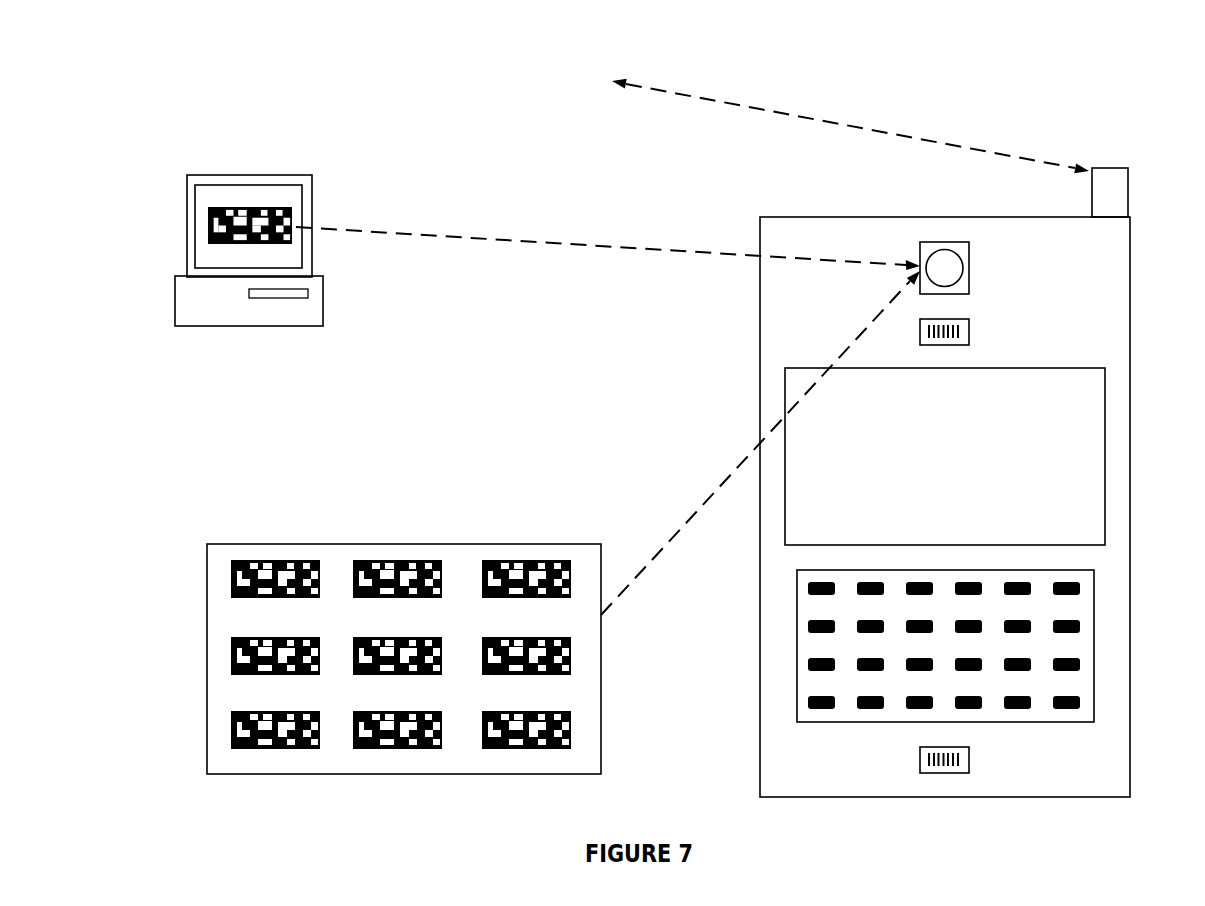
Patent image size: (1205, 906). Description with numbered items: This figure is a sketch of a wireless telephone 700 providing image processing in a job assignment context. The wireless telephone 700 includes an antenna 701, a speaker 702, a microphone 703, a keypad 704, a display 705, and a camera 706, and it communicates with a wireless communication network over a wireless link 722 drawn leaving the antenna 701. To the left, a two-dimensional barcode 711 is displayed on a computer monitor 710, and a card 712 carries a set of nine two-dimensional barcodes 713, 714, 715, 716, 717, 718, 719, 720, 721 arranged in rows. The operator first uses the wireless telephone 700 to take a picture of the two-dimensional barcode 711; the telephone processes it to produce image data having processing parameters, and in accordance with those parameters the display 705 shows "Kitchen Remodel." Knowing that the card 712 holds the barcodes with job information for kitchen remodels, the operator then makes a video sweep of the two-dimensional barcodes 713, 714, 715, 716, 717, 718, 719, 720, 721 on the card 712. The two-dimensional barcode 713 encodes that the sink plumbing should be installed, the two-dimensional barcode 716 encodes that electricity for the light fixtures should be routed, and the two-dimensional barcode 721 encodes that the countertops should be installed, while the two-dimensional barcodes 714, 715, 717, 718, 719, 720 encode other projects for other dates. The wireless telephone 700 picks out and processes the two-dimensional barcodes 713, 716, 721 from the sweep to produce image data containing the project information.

The wireless telephone 700 is at (1114, 99).
The antenna 701 is at (1126, 168).
The speaker 702 is at (970, 330).
The microphone 703 is at (970, 758).
The keypad 704 is at (860, 722).
The display 705 is at (1086, 368).
The camera 706 is at (970, 264).
The computer monitor 710 is at (188, 326).
The two-dimensional barcode 711 is at (208, 232).
The card 712 is at (207, 574).
The two-dimensional barcode 713 is at (272, 599).
The two-dimensional barcode 714 is at (393, 599).
The two-dimensional barcode 715 is at (520, 599).
The two-dimensional barcode 716 is at (272, 675).
The two-dimensional barcode 717 is at (393, 675).
The two-dimensional barcode 718 is at (520, 675).
The two-dimensional barcode 719 is at (272, 749).
The two-dimensional barcode 720 is at (393, 749).
The two-dimensional barcode 721 is at (520, 749).
The wireless link 722 is at (755, 109).